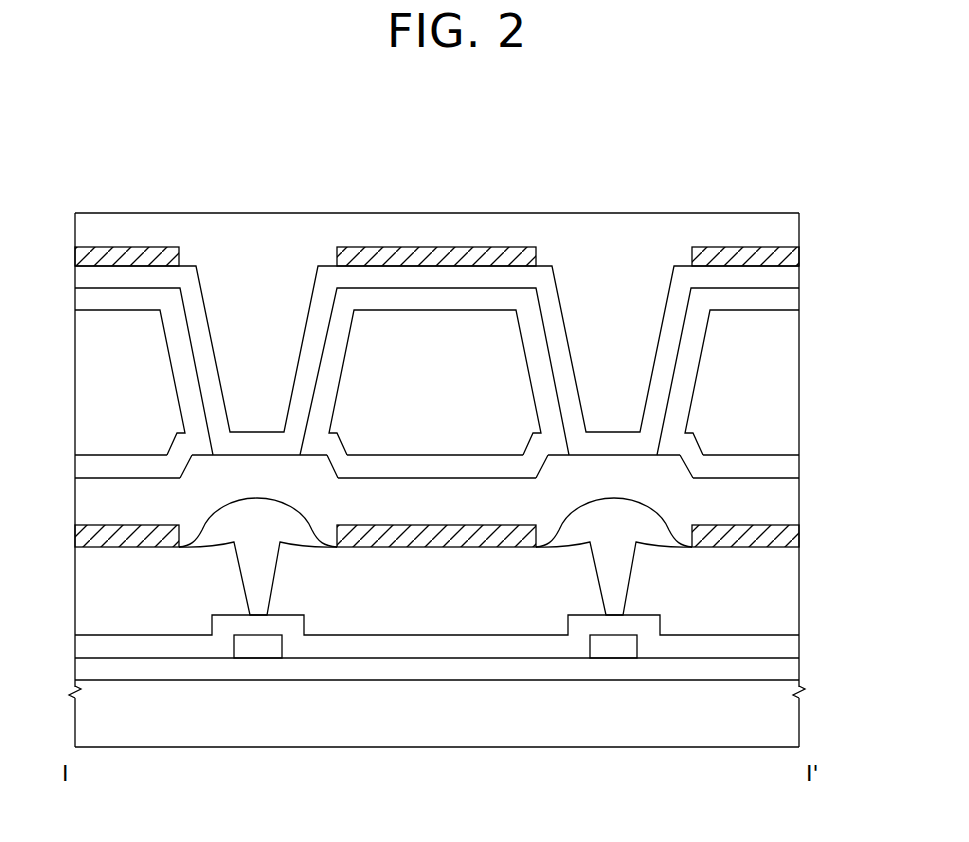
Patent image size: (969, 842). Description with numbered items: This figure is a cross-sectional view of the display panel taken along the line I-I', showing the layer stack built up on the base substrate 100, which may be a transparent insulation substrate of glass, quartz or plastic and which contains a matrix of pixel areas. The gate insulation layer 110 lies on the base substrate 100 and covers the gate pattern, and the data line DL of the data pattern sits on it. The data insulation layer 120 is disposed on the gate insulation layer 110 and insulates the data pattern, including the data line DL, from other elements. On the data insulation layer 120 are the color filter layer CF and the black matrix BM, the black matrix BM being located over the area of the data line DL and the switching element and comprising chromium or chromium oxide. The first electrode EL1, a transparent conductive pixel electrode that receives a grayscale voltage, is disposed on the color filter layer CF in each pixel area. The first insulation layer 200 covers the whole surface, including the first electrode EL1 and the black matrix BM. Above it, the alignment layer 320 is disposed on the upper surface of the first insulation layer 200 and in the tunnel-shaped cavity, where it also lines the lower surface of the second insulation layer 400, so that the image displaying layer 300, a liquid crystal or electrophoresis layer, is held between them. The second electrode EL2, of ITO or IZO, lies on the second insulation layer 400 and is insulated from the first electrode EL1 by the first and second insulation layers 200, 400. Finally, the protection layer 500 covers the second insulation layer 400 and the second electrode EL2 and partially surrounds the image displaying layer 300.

The protection layer 500 is at (790, 231).
The second electrode EL2 is at (790, 260).
The second insulation layer 400 is at (790, 282).
The image displaying layer 300 is at (790, 387).
The alignment layer 320 is at (790, 467).
The first insulation layer 200 is at (790, 501).
The first electrode EL1 is at (790, 539).
The black matrix BM is at (615, 582).
The color filter layer CF is at (790, 617).
The data line DL is at (615, 652).
The data insulation layer 120 is at (790, 650).
The gate insulation layer 110 is at (790, 675).
The base substrate 100 is at (790, 722).